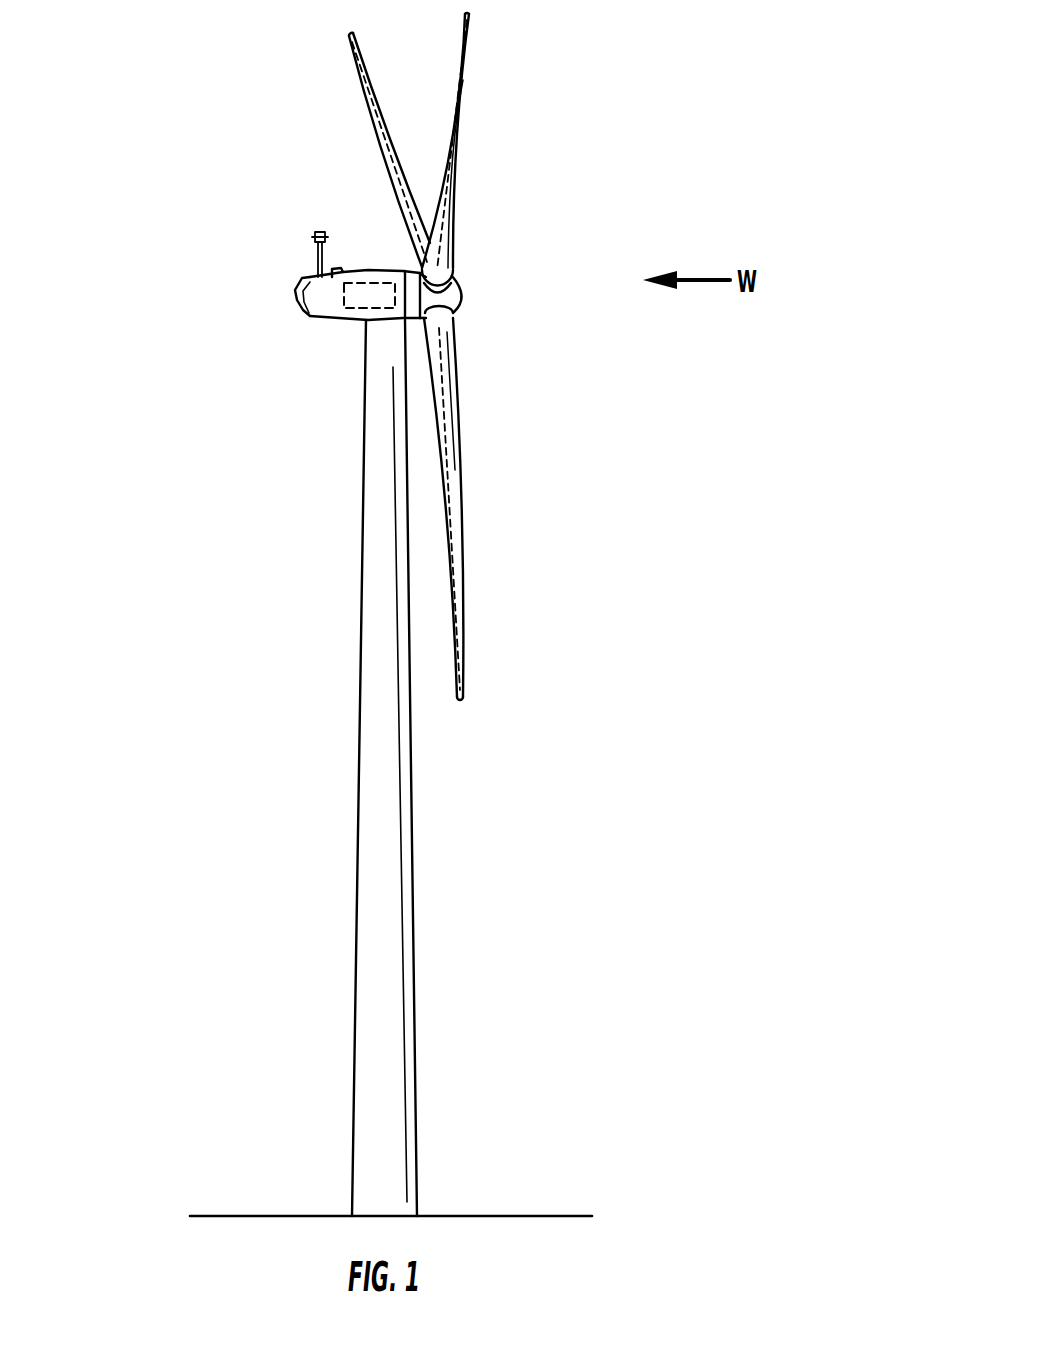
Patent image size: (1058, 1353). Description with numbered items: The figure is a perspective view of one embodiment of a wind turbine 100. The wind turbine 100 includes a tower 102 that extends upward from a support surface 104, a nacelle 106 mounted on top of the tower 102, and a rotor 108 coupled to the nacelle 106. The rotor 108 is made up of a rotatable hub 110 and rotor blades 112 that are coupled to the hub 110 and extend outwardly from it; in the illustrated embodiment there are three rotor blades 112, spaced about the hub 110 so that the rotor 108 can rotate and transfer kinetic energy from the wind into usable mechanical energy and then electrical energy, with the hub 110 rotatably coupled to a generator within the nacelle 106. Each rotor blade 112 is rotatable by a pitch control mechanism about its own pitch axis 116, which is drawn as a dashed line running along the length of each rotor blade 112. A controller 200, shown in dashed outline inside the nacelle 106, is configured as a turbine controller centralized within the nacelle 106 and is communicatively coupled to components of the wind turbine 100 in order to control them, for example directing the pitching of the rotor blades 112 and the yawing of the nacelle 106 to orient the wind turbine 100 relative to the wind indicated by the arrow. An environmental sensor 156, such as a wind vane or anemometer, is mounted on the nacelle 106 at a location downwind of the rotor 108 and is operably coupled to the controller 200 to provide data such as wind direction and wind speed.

The wind turbine 100 is at (600, 128).
The tower 102 is at (388, 832).
The support surface 104 is at (310, 1215).
The nacelle 106 is at (329, 320).
The rotor 108 is at (500, 242).
The rotatable hub 110 is at (465, 297).
The rotor blade 112 is at (452, 127).
The pitch axis 116 is at (387, 156).
The environmental sensor 156 is at (318, 260).
The controller 200 is at (377, 282).